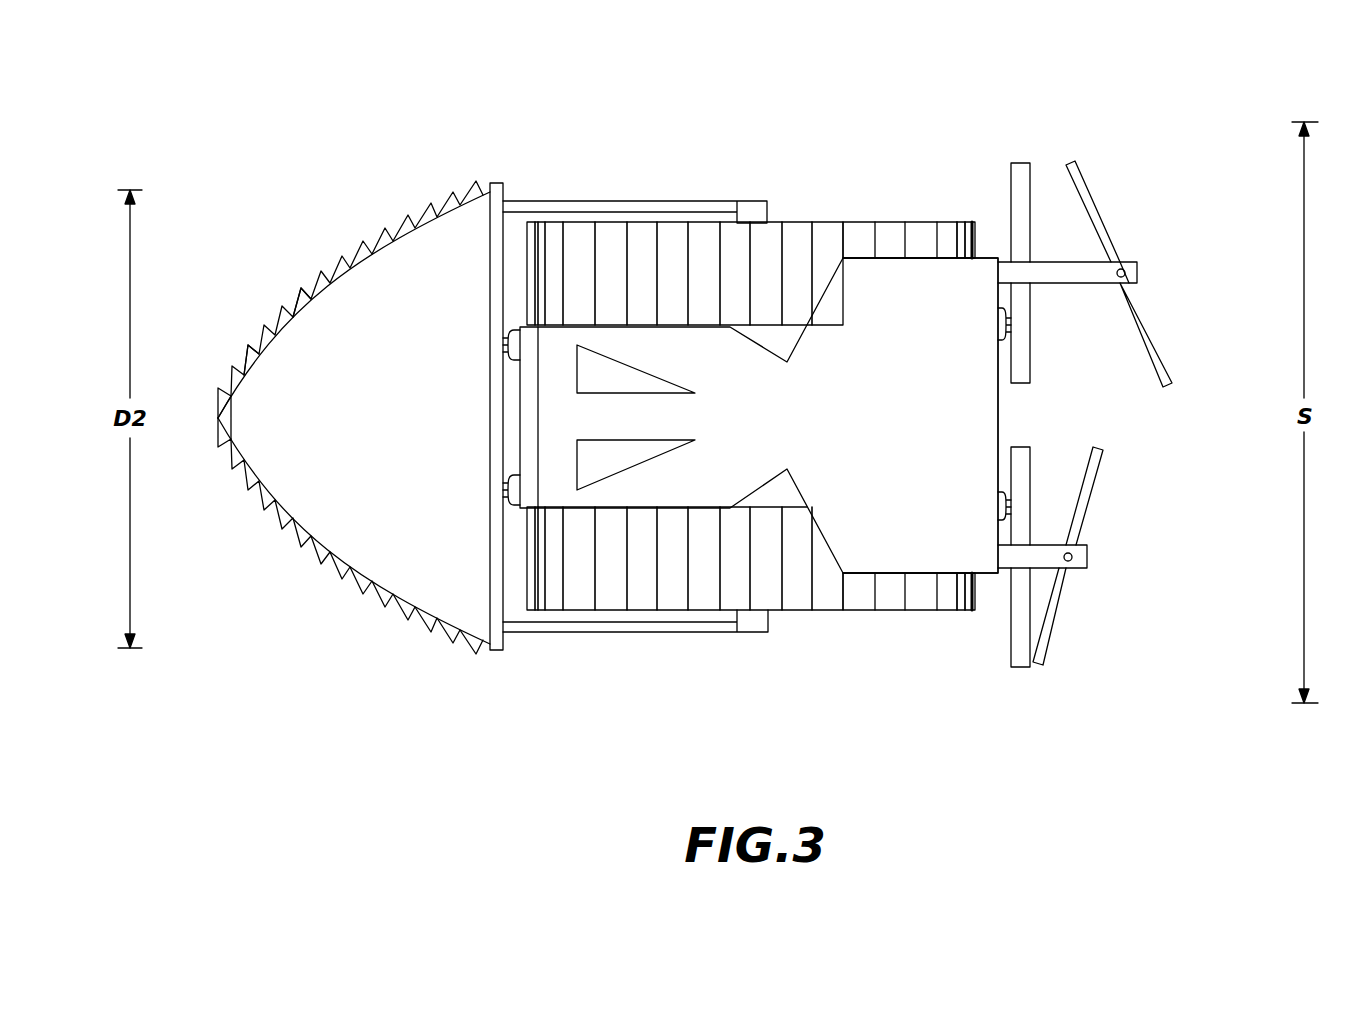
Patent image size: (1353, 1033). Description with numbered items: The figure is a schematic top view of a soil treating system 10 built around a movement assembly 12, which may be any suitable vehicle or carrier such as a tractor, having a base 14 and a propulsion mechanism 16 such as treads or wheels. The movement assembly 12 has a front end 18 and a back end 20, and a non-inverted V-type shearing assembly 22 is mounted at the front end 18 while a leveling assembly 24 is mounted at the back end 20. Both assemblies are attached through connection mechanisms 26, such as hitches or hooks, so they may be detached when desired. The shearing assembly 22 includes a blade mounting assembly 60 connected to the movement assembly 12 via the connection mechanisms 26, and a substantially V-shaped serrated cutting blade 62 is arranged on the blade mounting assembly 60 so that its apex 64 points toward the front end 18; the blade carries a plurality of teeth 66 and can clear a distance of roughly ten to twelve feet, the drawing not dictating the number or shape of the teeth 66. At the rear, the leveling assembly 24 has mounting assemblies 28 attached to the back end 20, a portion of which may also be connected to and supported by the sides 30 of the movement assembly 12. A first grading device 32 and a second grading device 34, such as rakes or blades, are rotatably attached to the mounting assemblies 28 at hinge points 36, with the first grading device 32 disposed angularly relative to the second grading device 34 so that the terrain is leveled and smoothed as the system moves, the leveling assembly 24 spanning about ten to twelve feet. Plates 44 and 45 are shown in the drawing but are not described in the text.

The soil treating system 10 is at (926, 88).
The movement assembly 12 is at (850, 440).
The base 14 is at (884, 290).
The propulsion mechanism 16 is at (795, 240).
The front end 18 is at (532, 402).
The back end 20 is at (1000, 416).
The shearing assembly 22 is at (324, 467).
The leveling assembly 24 is at (1120, 414).
The connection mechanism 26 is at (503, 338).
The mounting assembly 28 is at (1020, 168).
The side 30 is at (976, 254).
The first grading device 32 is at (1080, 185).
The second grading device 34 is at (1089, 556).
The hinge point 36 is at (1126, 273).
The mounting plate 44 is at (500, 189).
The side bar 45 is at (658, 201).
The blade mounting assembly 60 is at (410, 262).
The serrated cutting blade 62 is at (305, 304).
The apex 64 is at (217, 419).
The teeth 66 is at (247, 363).